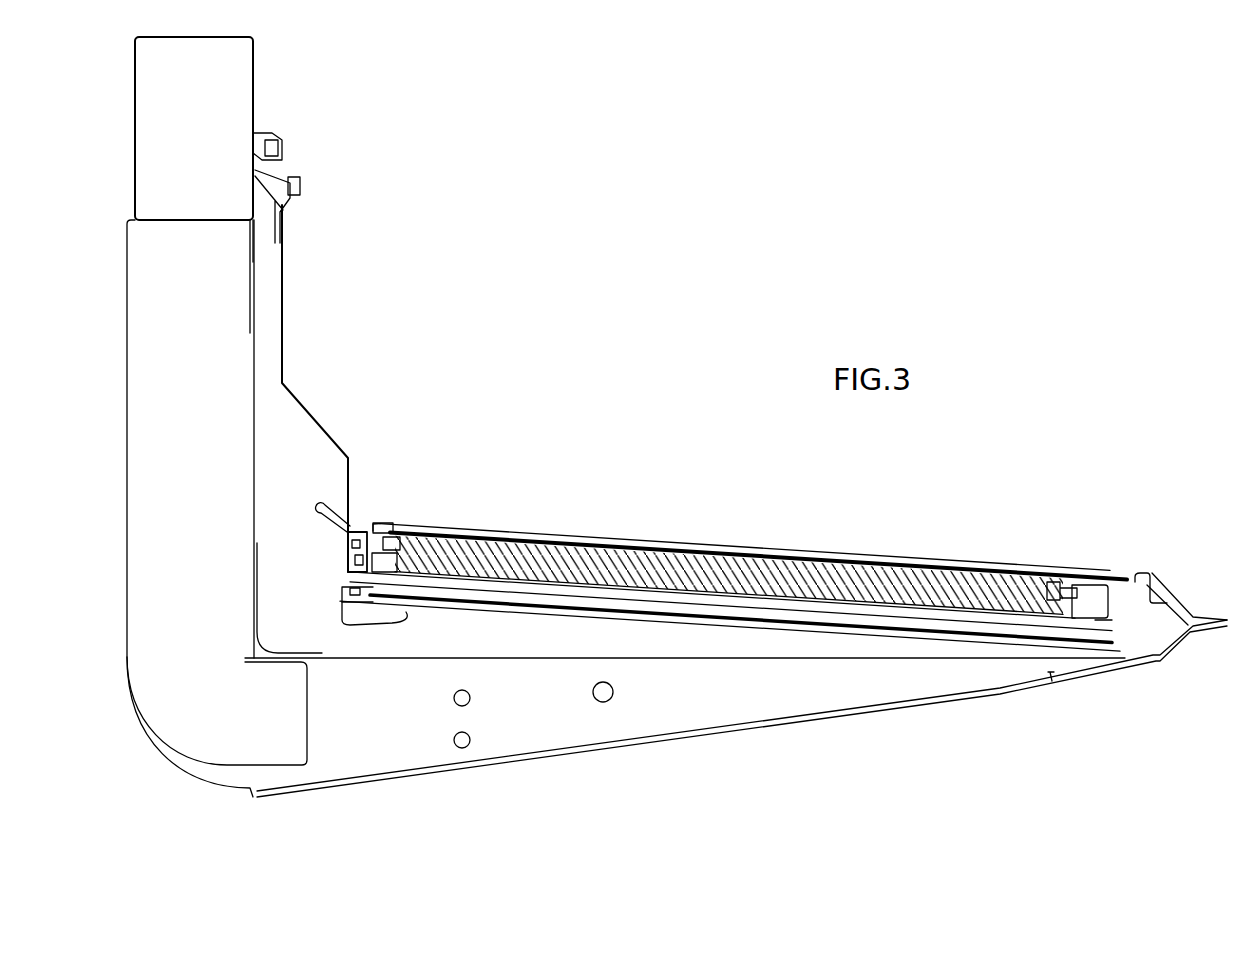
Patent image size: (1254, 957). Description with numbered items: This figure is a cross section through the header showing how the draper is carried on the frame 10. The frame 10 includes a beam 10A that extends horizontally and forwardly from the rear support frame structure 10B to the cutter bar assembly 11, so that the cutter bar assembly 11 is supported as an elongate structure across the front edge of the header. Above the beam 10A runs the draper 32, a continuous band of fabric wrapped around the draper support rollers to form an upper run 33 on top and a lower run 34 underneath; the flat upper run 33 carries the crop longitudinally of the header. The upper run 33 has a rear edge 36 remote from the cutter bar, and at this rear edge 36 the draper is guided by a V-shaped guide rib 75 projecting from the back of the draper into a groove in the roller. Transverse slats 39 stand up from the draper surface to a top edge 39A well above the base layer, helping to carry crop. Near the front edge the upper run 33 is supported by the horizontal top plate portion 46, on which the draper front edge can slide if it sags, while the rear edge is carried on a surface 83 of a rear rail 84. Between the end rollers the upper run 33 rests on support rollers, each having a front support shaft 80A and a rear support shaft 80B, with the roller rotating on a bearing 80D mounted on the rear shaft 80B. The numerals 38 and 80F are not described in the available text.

The frame 10 is at (302, 386).
The beam 10A is at (553, 725).
The rear support frame structure 10B is at (220, 100).
The cutter bar assembly 11 is at (1210, 608).
The draper 32 is at (573, 535).
The upper run 33 is at (668, 548).
The lower run 34 is at (722, 612).
The rear edge 36 is at (355, 530).
The lower bracket 38 is at (347, 595).
The transverse slats 39 is at (750, 555).
The top edge 39A is at (838, 557).
The top plate portion 46 is at (1100, 620).
The V-shaped guide rib 75 is at (395, 538).
The support shaft 80A is at (1045, 572).
The support shaft 80B is at (385, 560).
The bearing 80D is at (1020, 572).
The left upper holder 80F is at (398, 533).
The surface 83 is at (344, 550).
The rear rail 84 is at (349, 562).